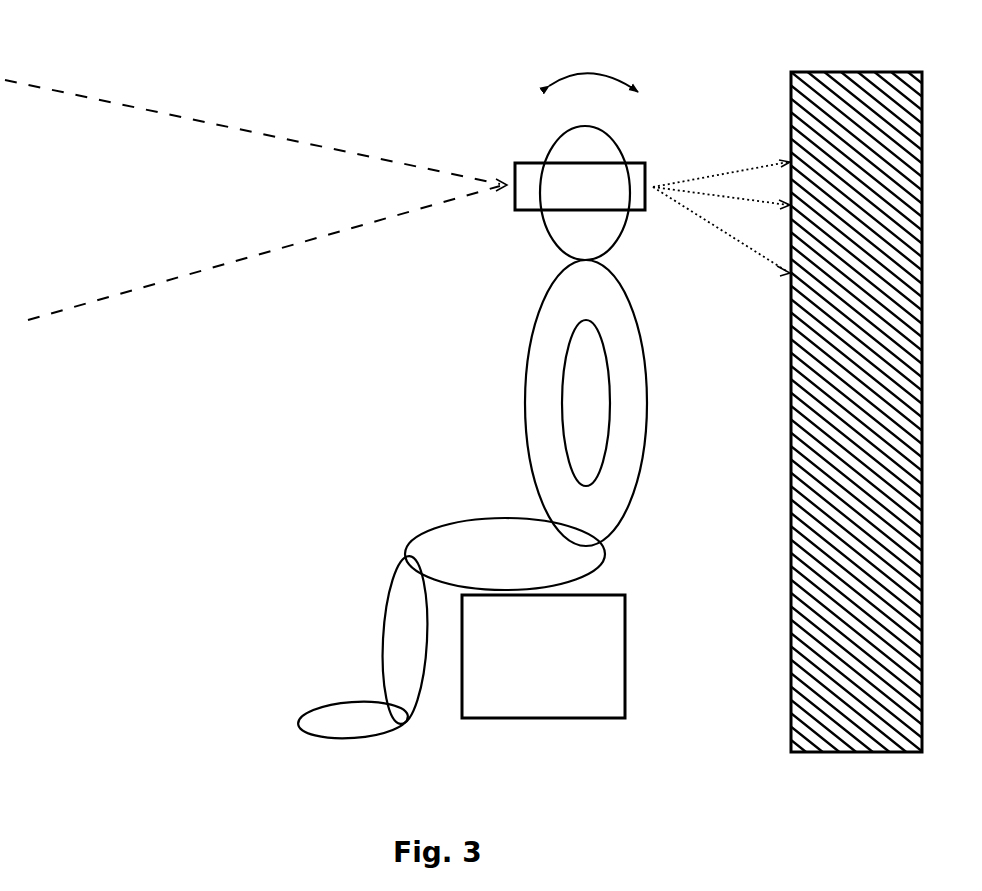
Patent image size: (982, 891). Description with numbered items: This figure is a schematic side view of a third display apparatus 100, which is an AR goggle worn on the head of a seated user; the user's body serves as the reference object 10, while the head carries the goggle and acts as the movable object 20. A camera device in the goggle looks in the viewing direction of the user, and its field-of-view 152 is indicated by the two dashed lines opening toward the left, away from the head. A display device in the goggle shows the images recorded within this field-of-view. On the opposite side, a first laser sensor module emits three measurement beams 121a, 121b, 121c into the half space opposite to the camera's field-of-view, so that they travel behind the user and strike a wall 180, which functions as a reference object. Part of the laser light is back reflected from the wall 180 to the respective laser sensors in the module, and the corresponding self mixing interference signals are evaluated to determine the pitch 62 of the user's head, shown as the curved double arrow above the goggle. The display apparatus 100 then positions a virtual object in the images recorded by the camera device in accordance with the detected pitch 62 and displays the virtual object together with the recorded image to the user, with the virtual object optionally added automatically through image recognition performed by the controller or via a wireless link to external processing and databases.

The reference object 10 is at (525, 404).
The movable object 20 is at (540, 237).
The display apparatus 100 is at (522, 160).
The pitch 62 is at (605, 72).
The first measurement beam of first laser sensor module 121a is at (705, 178).
The second measurement beam of first laser sensor module 121b is at (727, 198).
The third measurement beam of first laser sensor module 121c is at (767, 262).
The field-of-view 152 is at (180, 275).
The wall 180 is at (791, 470).